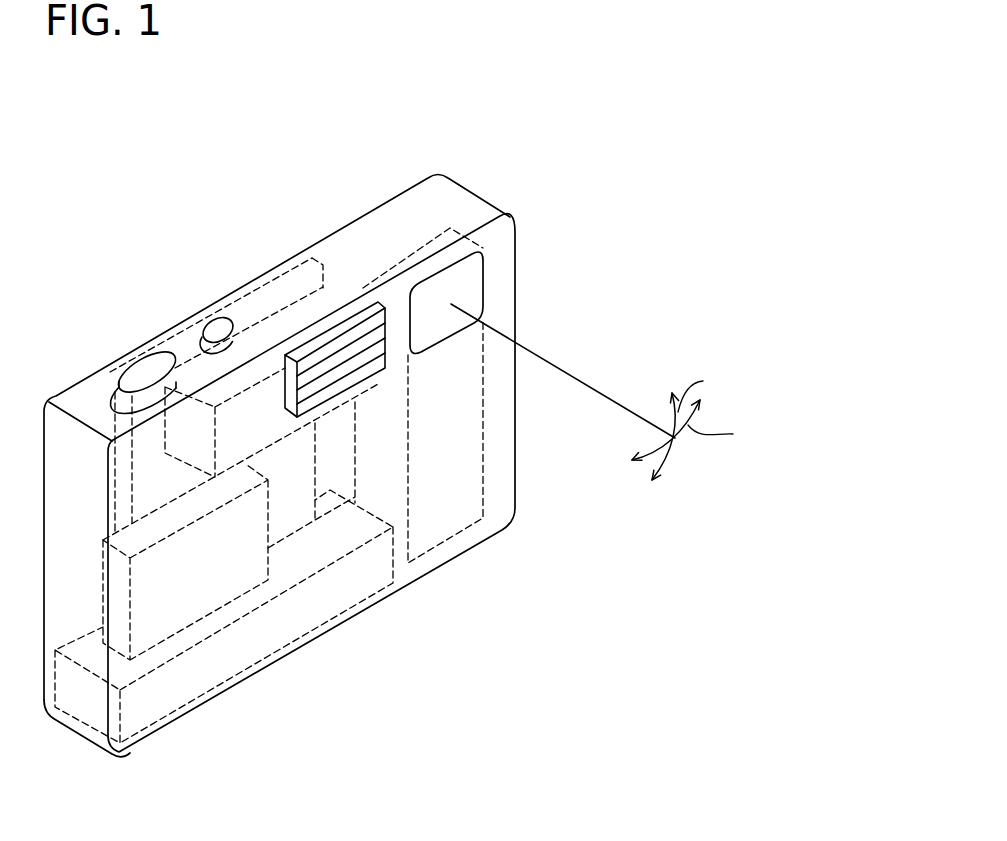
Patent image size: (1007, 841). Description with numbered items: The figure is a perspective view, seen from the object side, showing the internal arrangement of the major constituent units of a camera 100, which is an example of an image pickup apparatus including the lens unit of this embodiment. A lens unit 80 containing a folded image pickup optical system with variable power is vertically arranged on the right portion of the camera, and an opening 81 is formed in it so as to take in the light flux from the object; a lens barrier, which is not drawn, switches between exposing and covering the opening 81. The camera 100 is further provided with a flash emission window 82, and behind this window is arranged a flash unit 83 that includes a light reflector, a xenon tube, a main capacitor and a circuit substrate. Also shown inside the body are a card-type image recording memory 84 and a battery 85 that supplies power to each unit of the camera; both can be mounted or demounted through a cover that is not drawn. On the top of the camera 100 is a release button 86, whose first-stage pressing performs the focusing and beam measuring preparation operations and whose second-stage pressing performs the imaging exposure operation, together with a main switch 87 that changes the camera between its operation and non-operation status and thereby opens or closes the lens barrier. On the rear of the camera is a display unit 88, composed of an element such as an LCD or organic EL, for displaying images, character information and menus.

The camera 100 is at (330, 163).
The lens unit 80 is at (470, 447).
The opening 81 is at (465, 296).
The flash emission window 82 is at (348, 341).
The flash unit 83 is at (330, 293).
The image recording memory 84 is at (193, 610).
The battery 85 is at (270, 635).
The release button 86 is at (147, 372).
The main switch 87 is at (218, 330).
The display unit 88 is at (257, 293).